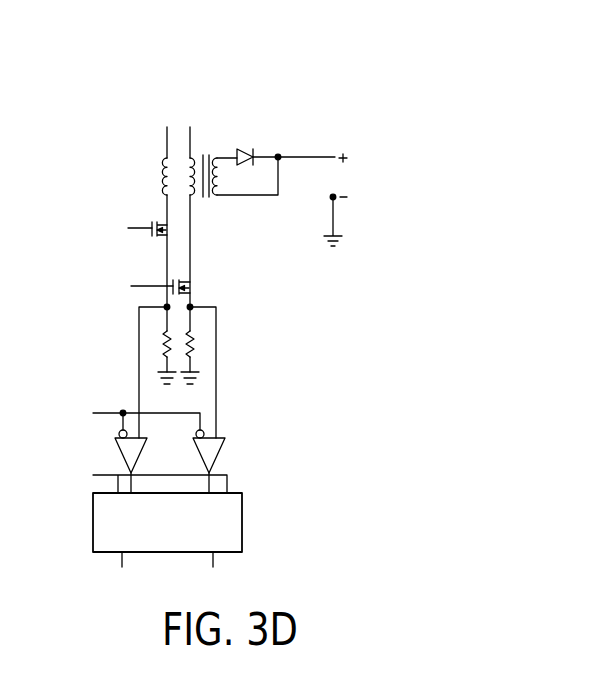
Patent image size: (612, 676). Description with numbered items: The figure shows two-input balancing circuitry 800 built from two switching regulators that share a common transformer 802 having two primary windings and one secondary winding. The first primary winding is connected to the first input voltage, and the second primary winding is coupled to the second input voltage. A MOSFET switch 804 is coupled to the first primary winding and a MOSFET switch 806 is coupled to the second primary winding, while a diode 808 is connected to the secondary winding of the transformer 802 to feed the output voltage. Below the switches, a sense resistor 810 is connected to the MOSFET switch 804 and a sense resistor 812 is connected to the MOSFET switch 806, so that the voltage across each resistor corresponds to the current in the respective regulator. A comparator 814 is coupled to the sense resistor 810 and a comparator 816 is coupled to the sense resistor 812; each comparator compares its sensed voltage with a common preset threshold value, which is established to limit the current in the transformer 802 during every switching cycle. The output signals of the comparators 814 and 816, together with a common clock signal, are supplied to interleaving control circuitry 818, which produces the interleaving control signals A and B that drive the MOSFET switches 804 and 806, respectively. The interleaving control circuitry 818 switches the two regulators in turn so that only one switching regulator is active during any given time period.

The two-input balancing circuitry 800 is at (209, 66).
The transformer 802 is at (206, 203).
The MOSFET switch 804 is at (157, 220).
The MOSFET switch 806 is at (193, 285).
The diode 808 is at (241, 151).
The sense resistor 810 is at (165, 333).
The sense resistor 812 is at (192, 333).
The comparator 814 is at (121, 458).
The comparator 816 is at (222, 446).
The interleaving control circuitry 818 is at (243, 523).